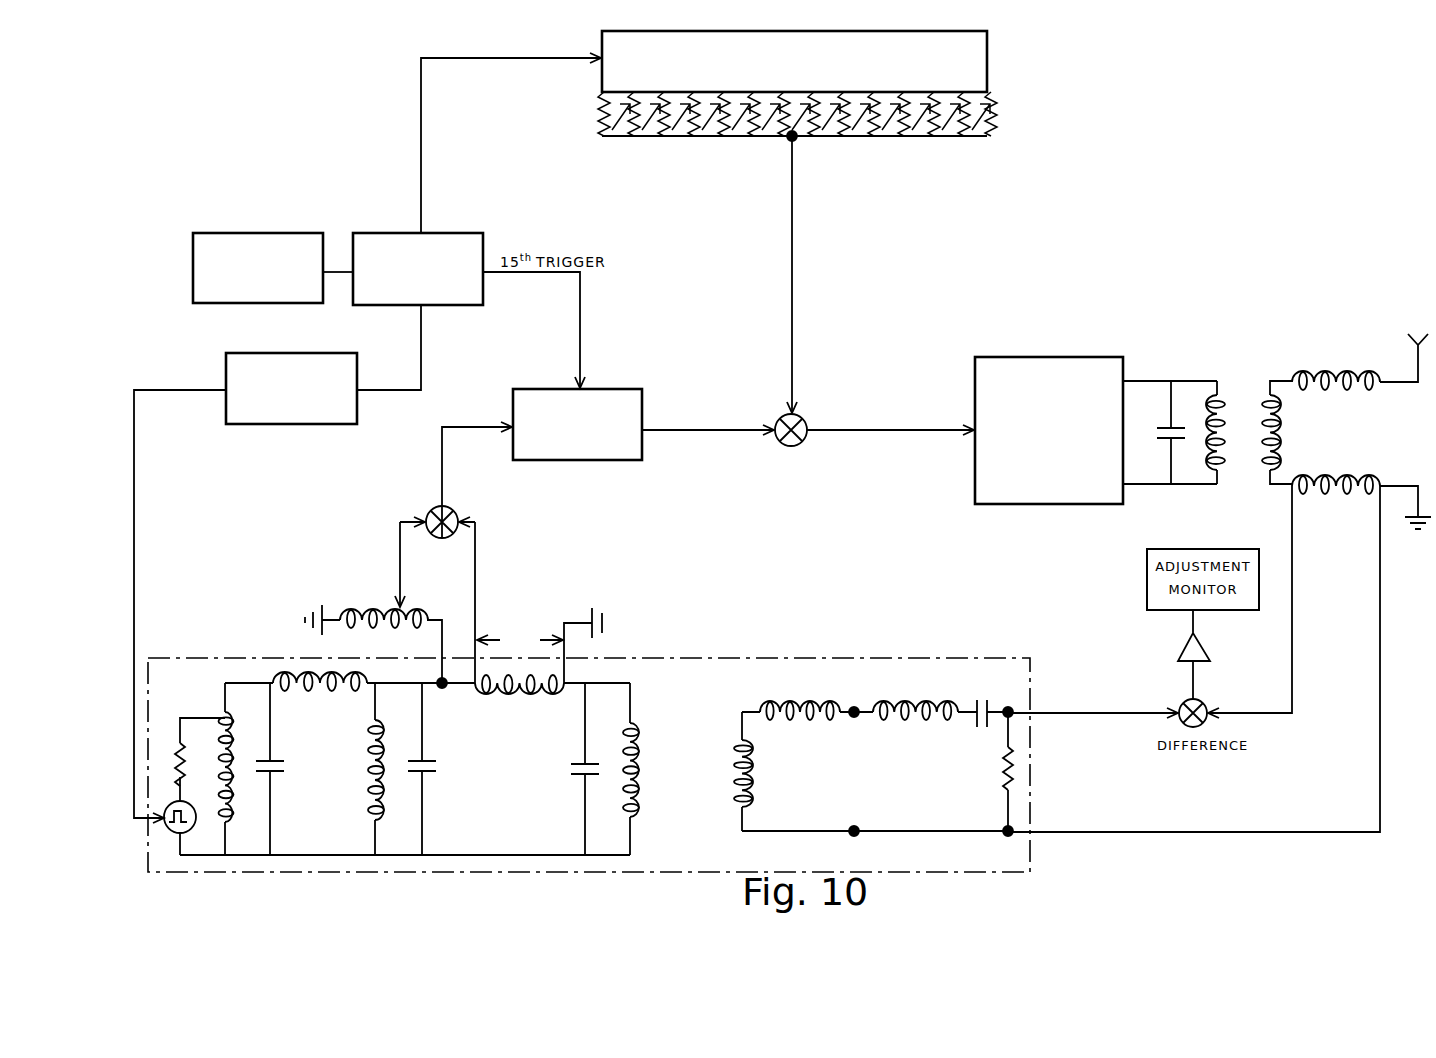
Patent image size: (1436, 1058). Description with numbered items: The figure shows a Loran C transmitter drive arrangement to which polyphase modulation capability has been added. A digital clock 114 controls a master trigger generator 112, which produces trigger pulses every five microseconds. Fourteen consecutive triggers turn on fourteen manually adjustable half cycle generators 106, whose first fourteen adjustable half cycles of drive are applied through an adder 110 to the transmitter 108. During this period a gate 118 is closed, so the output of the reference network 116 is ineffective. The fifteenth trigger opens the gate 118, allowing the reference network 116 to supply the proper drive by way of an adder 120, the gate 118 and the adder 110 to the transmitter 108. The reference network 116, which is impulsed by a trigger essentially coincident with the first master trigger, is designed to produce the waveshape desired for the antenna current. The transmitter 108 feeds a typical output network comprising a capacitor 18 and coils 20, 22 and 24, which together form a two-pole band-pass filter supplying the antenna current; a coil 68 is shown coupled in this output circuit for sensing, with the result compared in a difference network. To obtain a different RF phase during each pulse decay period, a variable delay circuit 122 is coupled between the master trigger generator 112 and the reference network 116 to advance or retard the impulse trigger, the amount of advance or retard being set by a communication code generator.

The half cycle generators 106 is at (988, 45).
The digital clock 114 is at (233, 233).
The master trigger generator 112 is at (423, 233).
The variable delay circuit 122 is at (287, 353).
The gate 118 is at (597, 389).
The adder 110 is at (777, 418).
The transmitter 108 is at (1036, 357).
The capacitor 18 is at (1170, 440).
The coil 20 is at (1212, 418).
The coil 22 is at (1279, 430).
The coil 24 is at (1308, 374).
The sensing coil 68 is at (1318, 482).
The adder 120 is at (426, 511).
The reference network 116 is at (183, 660).